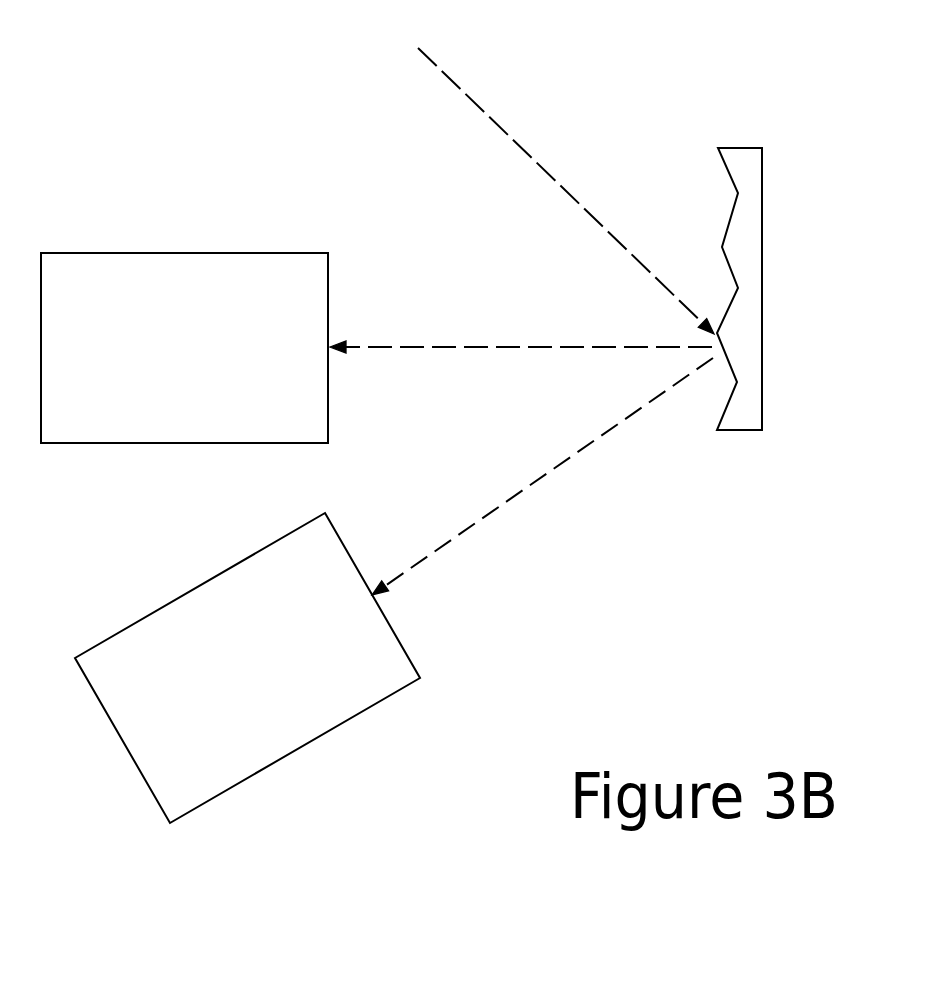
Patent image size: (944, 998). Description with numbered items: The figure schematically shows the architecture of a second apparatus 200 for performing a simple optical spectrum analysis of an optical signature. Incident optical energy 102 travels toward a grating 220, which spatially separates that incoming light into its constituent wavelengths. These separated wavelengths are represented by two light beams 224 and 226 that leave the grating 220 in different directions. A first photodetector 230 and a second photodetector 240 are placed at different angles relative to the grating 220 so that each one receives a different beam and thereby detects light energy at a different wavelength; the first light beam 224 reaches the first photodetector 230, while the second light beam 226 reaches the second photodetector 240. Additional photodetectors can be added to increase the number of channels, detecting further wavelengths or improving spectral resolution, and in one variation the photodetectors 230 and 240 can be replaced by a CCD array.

The second apparatus 200 is at (231, 109).
The incident optical energy 102 is at (566, 190).
The grating 220 is at (741, 265).
The light beam 224 is at (521, 329).
The light beam 226 is at (542, 476).
The photodetector 230 is at (158, 363).
The photodetector 240 is at (221, 687).